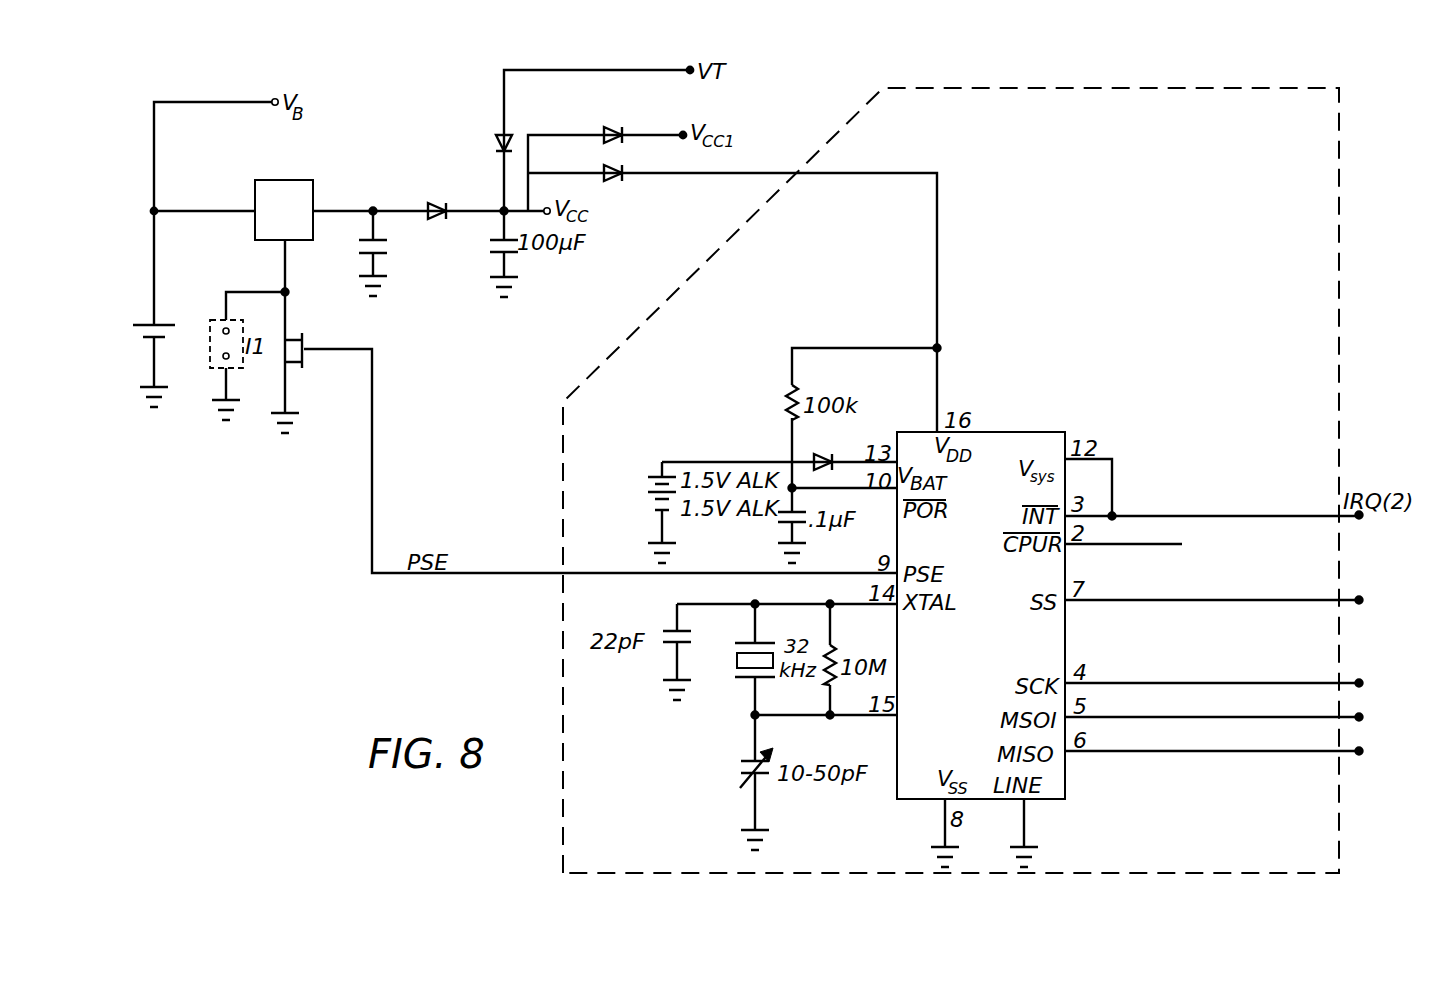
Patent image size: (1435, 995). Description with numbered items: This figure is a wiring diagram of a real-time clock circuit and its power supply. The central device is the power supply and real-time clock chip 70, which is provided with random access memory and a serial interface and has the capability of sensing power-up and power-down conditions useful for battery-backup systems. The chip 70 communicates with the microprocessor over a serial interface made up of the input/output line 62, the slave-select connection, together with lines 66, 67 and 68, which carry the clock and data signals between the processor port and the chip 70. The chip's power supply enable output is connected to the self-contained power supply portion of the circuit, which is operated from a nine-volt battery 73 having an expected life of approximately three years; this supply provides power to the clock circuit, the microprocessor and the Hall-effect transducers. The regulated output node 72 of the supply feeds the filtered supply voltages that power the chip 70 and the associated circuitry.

The input/output line 62 is at (1232, 600).
The line 66 is at (1303, 683).
The line 67 is at (1205, 717).
The line 68 is at (1310, 752).
The power supply and real-time clock chip 70 is at (847, 122).
The regulated voltage node 72 is at (375, 182).
The 9-volt battery 73 is at (151, 312).